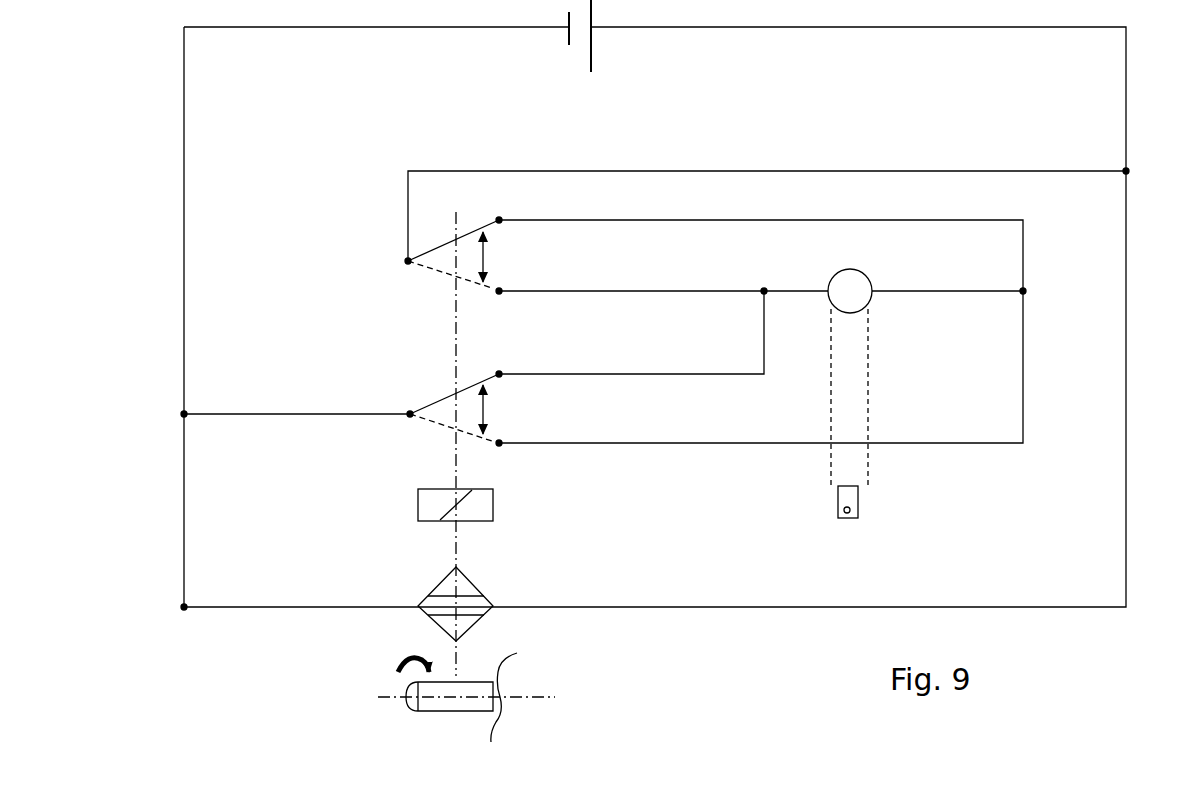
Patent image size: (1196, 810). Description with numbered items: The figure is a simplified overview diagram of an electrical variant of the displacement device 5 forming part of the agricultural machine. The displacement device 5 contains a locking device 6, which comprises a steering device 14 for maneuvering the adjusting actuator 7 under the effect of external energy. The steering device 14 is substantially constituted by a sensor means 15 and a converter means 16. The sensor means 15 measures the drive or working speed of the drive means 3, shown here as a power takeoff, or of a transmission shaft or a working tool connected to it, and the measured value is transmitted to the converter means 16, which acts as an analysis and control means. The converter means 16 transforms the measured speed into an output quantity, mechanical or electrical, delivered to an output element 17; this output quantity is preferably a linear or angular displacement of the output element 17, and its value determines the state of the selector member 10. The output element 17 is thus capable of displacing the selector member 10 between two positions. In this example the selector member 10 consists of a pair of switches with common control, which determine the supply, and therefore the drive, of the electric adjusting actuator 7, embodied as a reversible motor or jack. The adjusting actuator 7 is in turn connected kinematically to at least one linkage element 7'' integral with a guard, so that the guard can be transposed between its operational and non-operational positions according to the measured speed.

The displacement device 5 is at (686, 628).
The adjusting actuator 7 is at (679, 328).
The linkage element 7'' is at (944, 501).
The selector member 10 is at (505, 409).
The output element 17 is at (456, 340).
The locking device 6 is at (291, 289).
The steering device 14 is at (382, 578).
The converter means 16 is at (418, 503).
The sensor means 15 is at (415, 614).
The drive means 3 is at (441, 711).